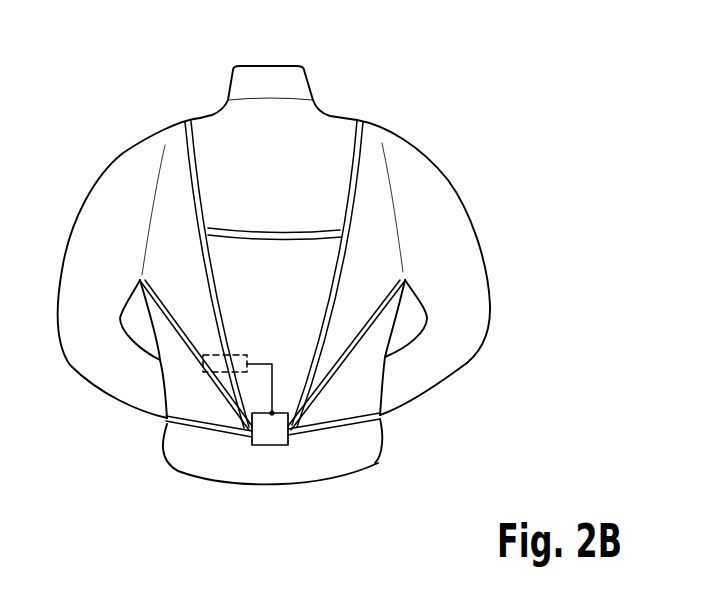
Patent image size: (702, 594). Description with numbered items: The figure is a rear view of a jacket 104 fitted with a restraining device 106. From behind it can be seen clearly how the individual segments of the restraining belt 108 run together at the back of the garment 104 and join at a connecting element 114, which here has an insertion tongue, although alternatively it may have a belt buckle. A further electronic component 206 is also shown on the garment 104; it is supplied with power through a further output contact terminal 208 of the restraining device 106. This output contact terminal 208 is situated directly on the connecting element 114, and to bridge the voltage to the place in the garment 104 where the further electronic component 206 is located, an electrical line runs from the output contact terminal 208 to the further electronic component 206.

The jacket 104 is at (145, 115).
The restraining device 106 is at (358, 195).
The restraining belt 108 is at (337, 267).
The further electronic component 206 is at (207, 374).
The further output contact terminal 208 is at (273, 420).
The connecting element 114 is at (277, 430).